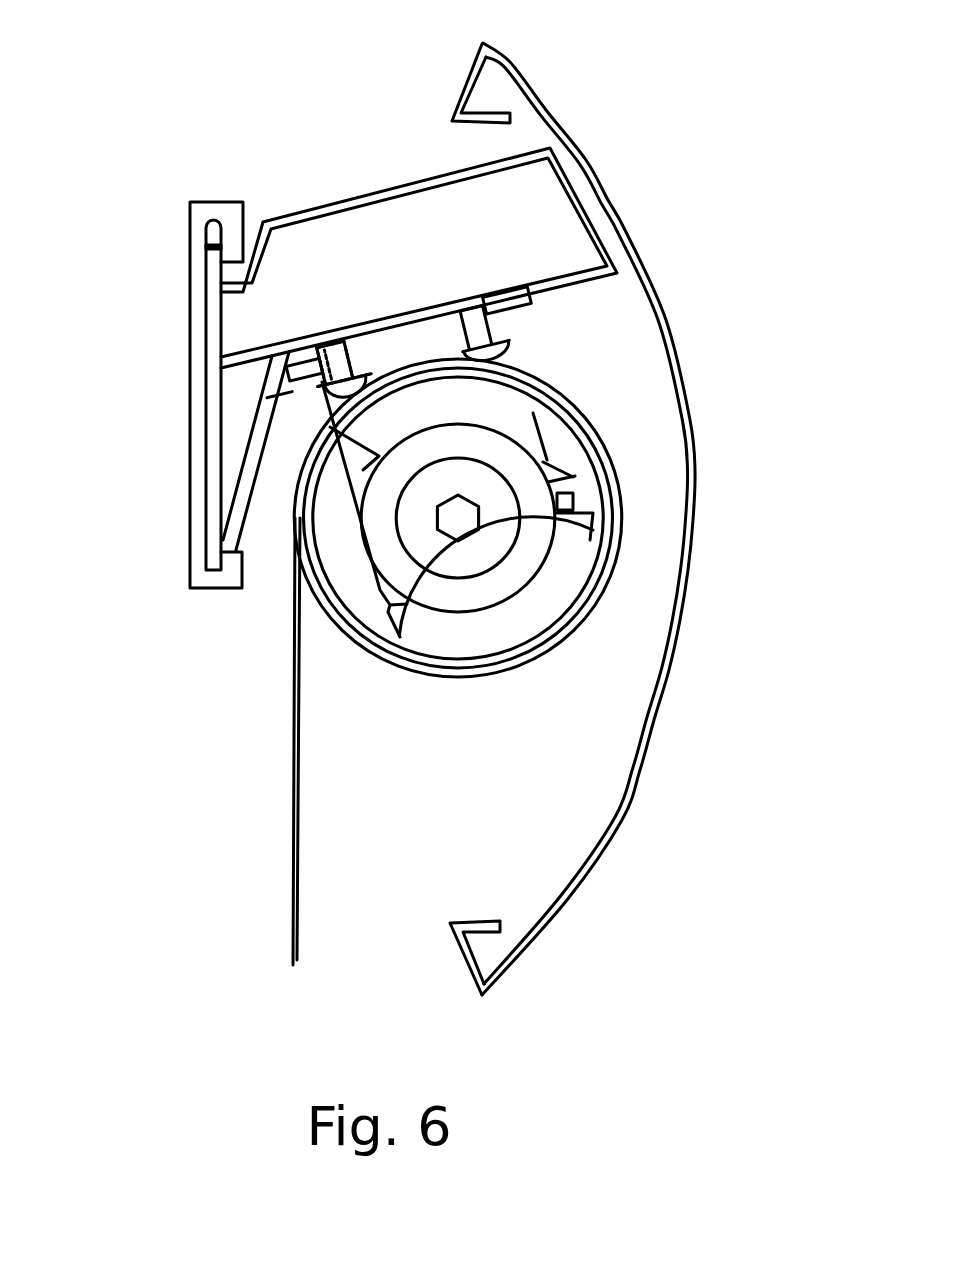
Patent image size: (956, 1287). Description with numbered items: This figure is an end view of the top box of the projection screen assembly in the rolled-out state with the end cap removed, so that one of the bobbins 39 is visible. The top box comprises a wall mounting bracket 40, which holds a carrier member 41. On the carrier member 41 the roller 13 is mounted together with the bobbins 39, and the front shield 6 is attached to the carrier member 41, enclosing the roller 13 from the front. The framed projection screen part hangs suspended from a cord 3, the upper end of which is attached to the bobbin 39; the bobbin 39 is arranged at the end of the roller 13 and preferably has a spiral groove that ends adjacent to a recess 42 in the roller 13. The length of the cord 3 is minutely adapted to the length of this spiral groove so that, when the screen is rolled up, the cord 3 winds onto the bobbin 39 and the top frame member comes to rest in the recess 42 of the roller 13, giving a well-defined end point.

The cord 3 is at (292, 732).
The front shield 6 is at (680, 394).
The roller 13 is at (495, 657).
The bobbin 39 is at (392, 657).
The wall mounting bracket 40 is at (189, 236).
The carrier member 41 is at (393, 185).
The recess 42 is at (380, 590).